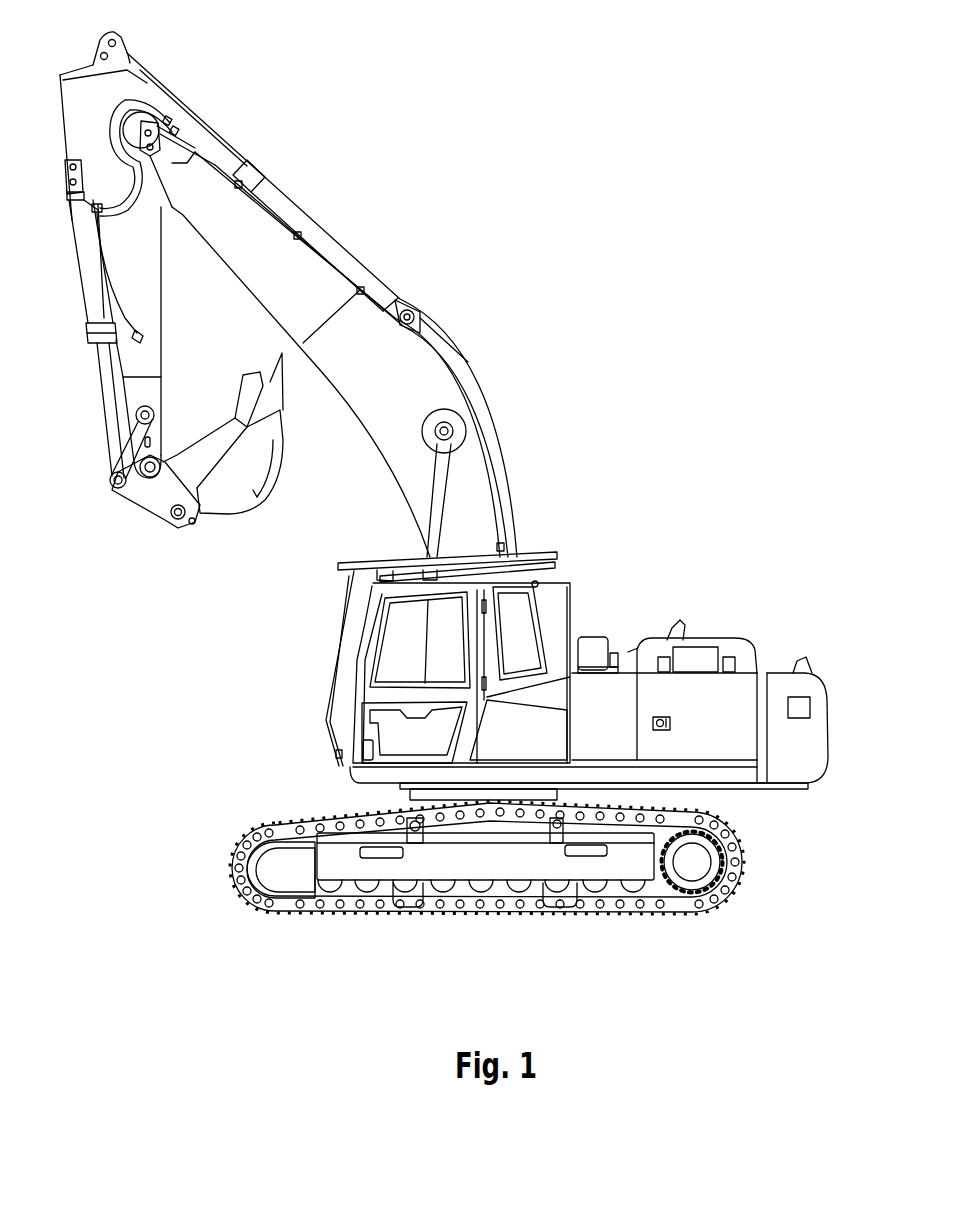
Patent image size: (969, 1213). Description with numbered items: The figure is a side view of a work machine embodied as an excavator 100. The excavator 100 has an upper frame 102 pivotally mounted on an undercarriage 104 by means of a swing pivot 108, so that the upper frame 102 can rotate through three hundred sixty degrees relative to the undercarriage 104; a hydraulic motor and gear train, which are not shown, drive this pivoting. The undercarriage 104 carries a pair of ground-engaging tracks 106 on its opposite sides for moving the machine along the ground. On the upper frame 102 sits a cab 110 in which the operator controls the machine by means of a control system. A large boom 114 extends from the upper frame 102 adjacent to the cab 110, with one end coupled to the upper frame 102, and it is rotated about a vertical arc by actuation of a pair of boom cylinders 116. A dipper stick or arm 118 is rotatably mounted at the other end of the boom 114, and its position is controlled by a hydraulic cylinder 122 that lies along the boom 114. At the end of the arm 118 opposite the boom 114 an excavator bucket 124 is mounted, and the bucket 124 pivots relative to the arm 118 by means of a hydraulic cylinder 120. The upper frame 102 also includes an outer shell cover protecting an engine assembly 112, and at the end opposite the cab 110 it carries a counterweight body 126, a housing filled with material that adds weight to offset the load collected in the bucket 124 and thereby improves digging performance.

The excavator 100 is at (642, 175).
The upper frame 102 is at (763, 633).
The undercarriage 104 is at (737, 907).
The ground-engaging tracks 106 is at (233, 882).
The swing pivot 108 is at (483, 790).
The cab 110 is at (528, 630).
The engine assembly 112 is at (697, 627).
The boom 114 is at (317, 280).
The boom cylinders 116 is at (437, 498).
The dipper stick or arm 118 is at (140, 277).
The hydraulic cylinder 120 is at (85, 300).
The hydraulic cylinder 122 is at (183, 108).
The excavator bucket 124 is at (238, 513).
The counterweight body 126 is at (828, 753).